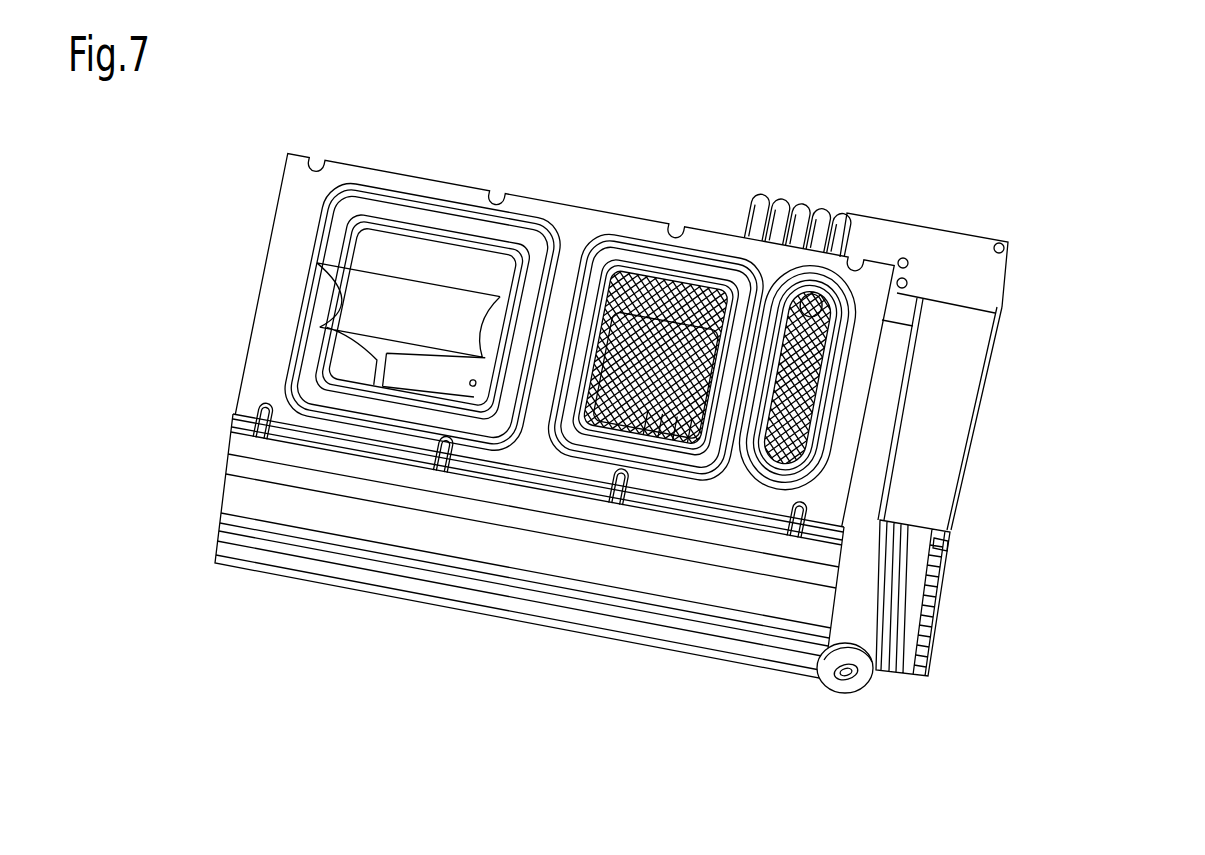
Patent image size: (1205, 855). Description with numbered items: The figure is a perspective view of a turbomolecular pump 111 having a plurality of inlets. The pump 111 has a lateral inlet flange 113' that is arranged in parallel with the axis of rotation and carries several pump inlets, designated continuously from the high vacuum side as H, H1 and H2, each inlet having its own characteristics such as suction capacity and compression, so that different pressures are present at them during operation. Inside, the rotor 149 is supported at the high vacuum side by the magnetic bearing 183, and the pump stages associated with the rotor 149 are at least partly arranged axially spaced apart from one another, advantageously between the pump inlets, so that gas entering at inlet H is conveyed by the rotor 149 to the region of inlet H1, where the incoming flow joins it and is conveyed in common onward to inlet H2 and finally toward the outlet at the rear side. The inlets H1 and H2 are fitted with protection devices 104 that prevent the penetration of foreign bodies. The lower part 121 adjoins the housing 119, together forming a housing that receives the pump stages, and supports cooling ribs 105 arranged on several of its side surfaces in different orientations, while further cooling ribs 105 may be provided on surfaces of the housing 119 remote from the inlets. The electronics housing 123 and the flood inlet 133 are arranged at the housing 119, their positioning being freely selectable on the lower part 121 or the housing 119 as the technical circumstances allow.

The turbomolecular pump 111 is at (1086, 194).
The lateral inlet flange 113' is at (543, 317).
The magnetic bearing 183 is at (360, 377).
The rotor 149 is at (420, 378).
The protection devices 104 is at (590, 495).
The housing 119 is at (243, 500).
The cooling ribs 105 is at (453, 597).
The electronics housing 123 is at (983, 282).
The lower part 121 is at (947, 473).
The flood inlet 133 is at (855, 694).